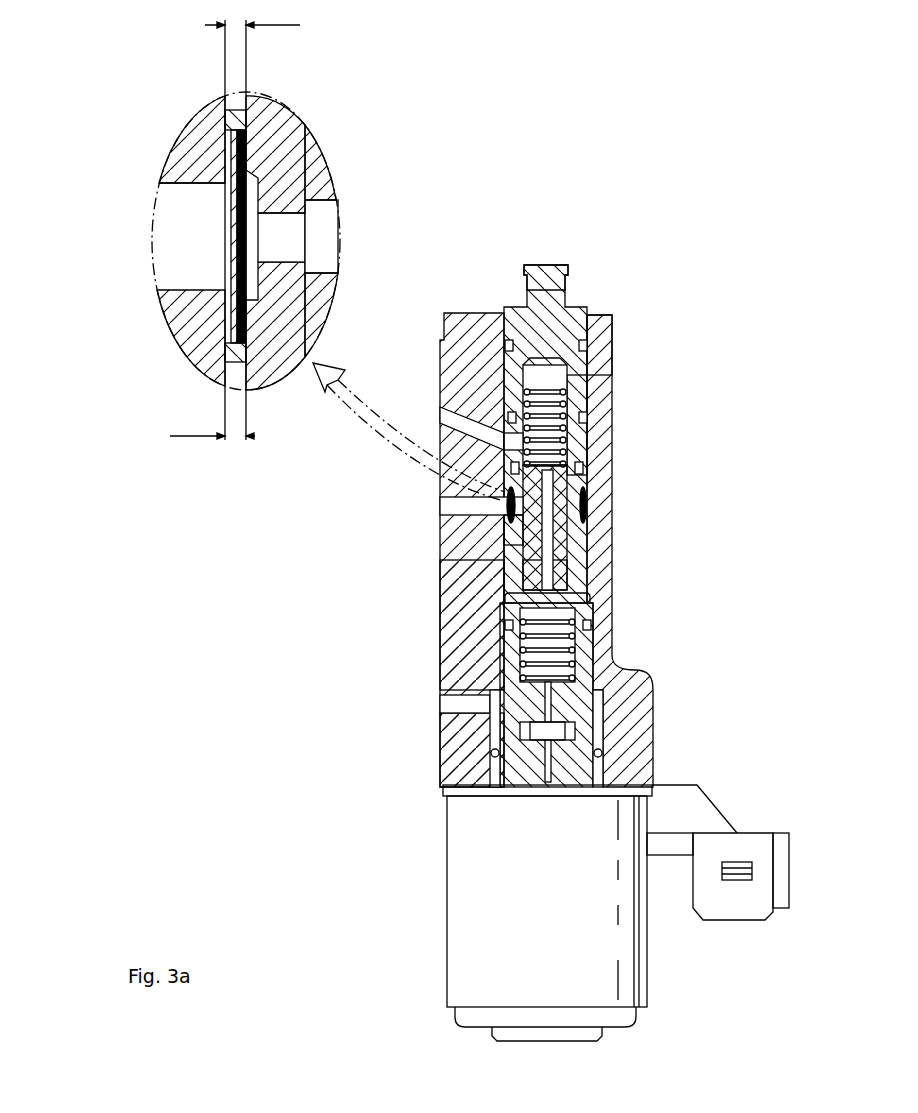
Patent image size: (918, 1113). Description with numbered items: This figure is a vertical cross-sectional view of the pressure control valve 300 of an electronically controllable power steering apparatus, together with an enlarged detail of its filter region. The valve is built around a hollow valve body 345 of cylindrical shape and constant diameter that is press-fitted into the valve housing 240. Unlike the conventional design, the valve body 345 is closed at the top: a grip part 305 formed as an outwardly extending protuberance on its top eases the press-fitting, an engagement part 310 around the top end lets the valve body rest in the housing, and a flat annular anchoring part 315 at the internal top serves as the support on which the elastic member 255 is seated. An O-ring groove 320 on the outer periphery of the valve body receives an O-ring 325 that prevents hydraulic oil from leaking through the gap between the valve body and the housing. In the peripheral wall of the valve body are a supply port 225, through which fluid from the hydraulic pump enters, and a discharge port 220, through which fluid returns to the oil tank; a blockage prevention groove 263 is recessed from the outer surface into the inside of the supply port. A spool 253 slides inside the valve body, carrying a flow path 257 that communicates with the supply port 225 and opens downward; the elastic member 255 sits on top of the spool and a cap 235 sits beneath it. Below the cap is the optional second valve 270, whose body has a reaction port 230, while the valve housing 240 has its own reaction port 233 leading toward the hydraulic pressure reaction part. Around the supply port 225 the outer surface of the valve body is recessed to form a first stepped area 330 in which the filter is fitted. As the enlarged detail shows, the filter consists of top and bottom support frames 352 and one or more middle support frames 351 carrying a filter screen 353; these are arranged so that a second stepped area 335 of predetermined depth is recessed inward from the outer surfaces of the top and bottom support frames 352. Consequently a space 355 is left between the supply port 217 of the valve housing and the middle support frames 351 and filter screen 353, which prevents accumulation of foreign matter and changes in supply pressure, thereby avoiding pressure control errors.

The pressure control valve 300 is at (640, 243).
The grip part 305 is at (562, 292).
The engagement part 310 is at (588, 307).
The O-ring groove 320 is at (602, 348).
The O-ring 325 is at (590, 347).
The anchoring part 315 is at (600, 385).
The elastic member 255 is at (570, 418).
The discharge port 220 is at (465, 440).
The supply port 225 is at (505, 502).
The flow path 257 is at (490, 556).
The spool 253 is at (575, 548).
The valve body 345 is at (575, 570).
The cap 235 is at (445, 605).
The second valve 270 is at (598, 640).
The valve housing 240 is at (440, 668).
The reaction port 233 is at (448, 705).
The reaction port 230 is at (470, 757).
The first stepped area 330 is at (300, 25).
The second stepped area 335 is at (220, 436).
The top and bottom support frames 352 is at (248, 117).
The middle support frames 351 is at (244, 135).
The blockage prevention groove 263 is at (262, 172).
The supply port 217 is at (172, 200).
The filter screen 353 is at (300, 213).
The space 355 is at (190, 266).